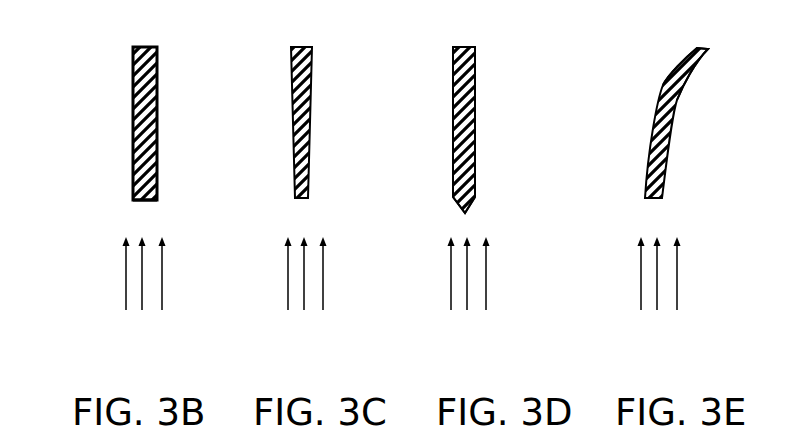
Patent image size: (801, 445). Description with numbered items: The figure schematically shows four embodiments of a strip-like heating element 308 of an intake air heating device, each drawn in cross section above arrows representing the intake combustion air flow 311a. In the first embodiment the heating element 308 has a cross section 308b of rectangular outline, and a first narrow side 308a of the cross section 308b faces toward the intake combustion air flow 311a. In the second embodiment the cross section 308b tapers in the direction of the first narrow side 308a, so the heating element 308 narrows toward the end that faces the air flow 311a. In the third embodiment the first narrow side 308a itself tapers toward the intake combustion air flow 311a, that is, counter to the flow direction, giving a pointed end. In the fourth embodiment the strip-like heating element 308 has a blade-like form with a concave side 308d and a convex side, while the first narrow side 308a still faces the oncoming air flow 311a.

In FIG. 3B, the strip-like heating element 308 is at (121, 122).
In FIG. 3C, the strip-like heating element 308 is at (298, 124).
In FIG. 3D, the strip-like heating element 308 is at (448, 125).
In FIG. 3E, the strip-like heating element 308 is at (653, 128).
In FIG. 3B, the first narrow side 308a is at (156, 200).
In FIG. 3C, the first narrow side 308a is at (307, 198).
In FIG. 3D, the first narrow side 308a is at (473, 205).
In FIG. 3E, the first narrow side 308a is at (660, 198).
In FIG. 3B, the cross section 308b is at (136, 123).
In FIG. 3C, the cross section 308b is at (292, 118).
In FIG. 3D, the cross section 308b is at (458, 118).
In FIG. 3E, the cross section 308b is at (657, 112).
In FIG. 3E, the concave side 308d is at (677, 97).
In FIG. 3B, the intake combustion air flow 311a is at (144, 310).
In FIG. 3C, the intake combustion air flow 311a is at (307, 310).
In FIG. 3D, the intake combustion air flow 311a is at (470, 310).
In FIG. 3E, the intake combustion air flow 311a is at (660, 310).